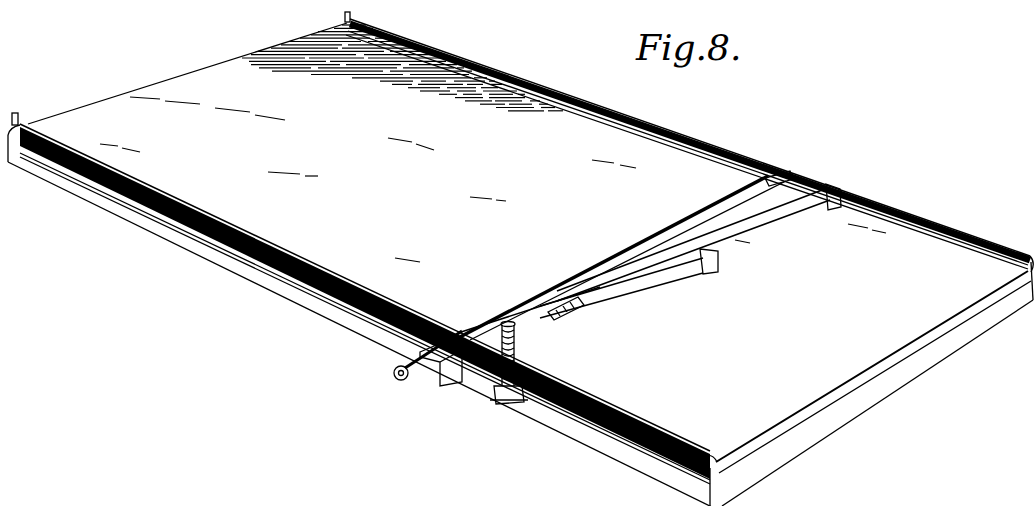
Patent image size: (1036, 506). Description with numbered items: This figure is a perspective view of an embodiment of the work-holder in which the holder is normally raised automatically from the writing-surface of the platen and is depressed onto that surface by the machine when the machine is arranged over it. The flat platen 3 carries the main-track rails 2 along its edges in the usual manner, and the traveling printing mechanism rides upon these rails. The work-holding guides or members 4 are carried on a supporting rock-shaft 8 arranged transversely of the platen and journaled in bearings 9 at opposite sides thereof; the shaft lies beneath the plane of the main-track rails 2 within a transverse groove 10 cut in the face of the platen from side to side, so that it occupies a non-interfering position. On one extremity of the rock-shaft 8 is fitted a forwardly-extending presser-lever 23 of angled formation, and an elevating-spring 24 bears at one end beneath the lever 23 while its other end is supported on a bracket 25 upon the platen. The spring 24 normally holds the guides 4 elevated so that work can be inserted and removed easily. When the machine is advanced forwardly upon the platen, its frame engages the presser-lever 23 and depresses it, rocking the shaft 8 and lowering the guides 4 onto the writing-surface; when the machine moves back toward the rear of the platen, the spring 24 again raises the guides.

The main-track rails 2 is at (483, 64).
The flat platen 3 is at (520, 259).
The work-holding guides 4 is at (768, 205).
The supporting-shaft 8 is at (640, 253).
The bearings 9 is at (447, 363).
The transverse groove 10 is at (543, 300).
The presser-lever 23 is at (560, 312).
The elevating-spring 24 is at (518, 352).
The bracket 25 is at (503, 400).